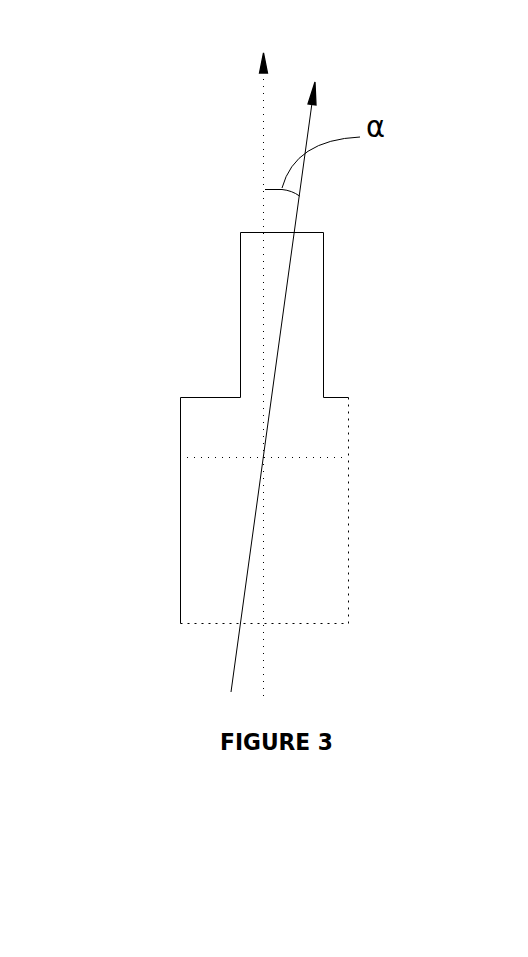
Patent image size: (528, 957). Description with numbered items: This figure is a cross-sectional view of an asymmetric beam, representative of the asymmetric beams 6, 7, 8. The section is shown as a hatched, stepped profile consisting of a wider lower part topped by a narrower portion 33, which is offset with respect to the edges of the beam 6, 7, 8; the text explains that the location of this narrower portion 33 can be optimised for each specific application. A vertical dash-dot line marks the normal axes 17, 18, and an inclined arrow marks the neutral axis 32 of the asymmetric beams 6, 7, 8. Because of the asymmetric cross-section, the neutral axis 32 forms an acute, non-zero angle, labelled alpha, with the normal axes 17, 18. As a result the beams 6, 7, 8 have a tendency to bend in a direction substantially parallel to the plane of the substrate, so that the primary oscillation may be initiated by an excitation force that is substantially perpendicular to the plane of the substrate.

The asymmetric beam 6 is at (350, 511).
The asymmetric beam 7 is at (350, 511).
The asymmetric beam 8 is at (337, 493).
The normal axis 17 is at (235, 376).
The normal axis 18 is at (263, 155).
The neutral axis 32 is at (285, 367).
The narrower portion 33 is at (330, 306).